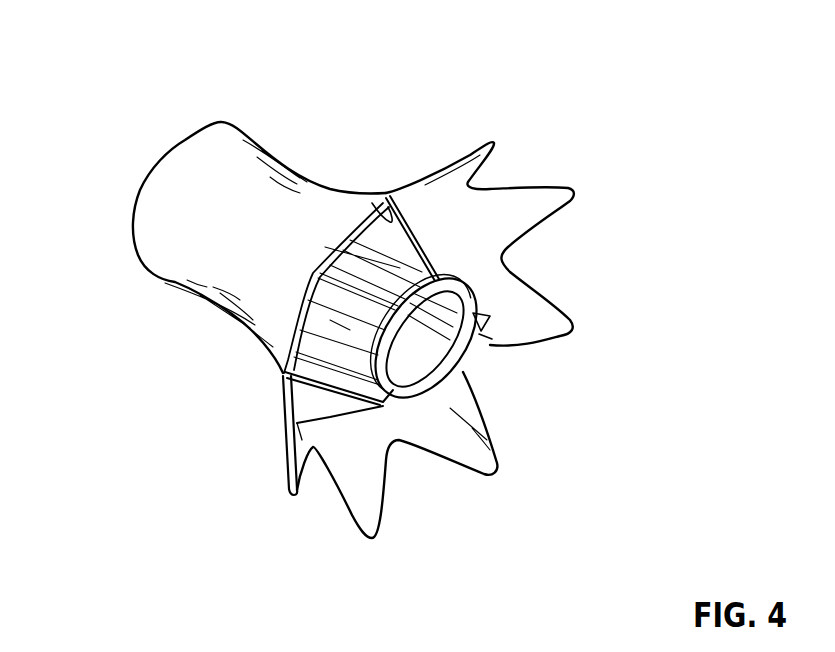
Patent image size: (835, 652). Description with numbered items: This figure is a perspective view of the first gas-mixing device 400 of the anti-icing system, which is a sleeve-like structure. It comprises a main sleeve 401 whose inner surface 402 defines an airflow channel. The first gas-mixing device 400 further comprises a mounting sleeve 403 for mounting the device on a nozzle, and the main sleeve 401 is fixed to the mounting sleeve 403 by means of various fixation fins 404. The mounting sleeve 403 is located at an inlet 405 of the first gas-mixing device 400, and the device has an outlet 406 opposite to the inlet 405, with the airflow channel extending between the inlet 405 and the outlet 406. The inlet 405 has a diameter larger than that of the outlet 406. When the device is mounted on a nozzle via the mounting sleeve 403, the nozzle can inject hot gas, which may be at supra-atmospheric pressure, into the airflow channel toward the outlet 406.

The first gas-mixing device 400 is at (622, 55).
The main sleeve 401 is at (220, 267).
The inner surface 402 is at (442, 200).
The mounting sleeve 403 is at (447, 365).
The fixation fins 404 is at (388, 225).
The inlet 405 is at (576, 280).
The outlet 406 is at (141, 148).